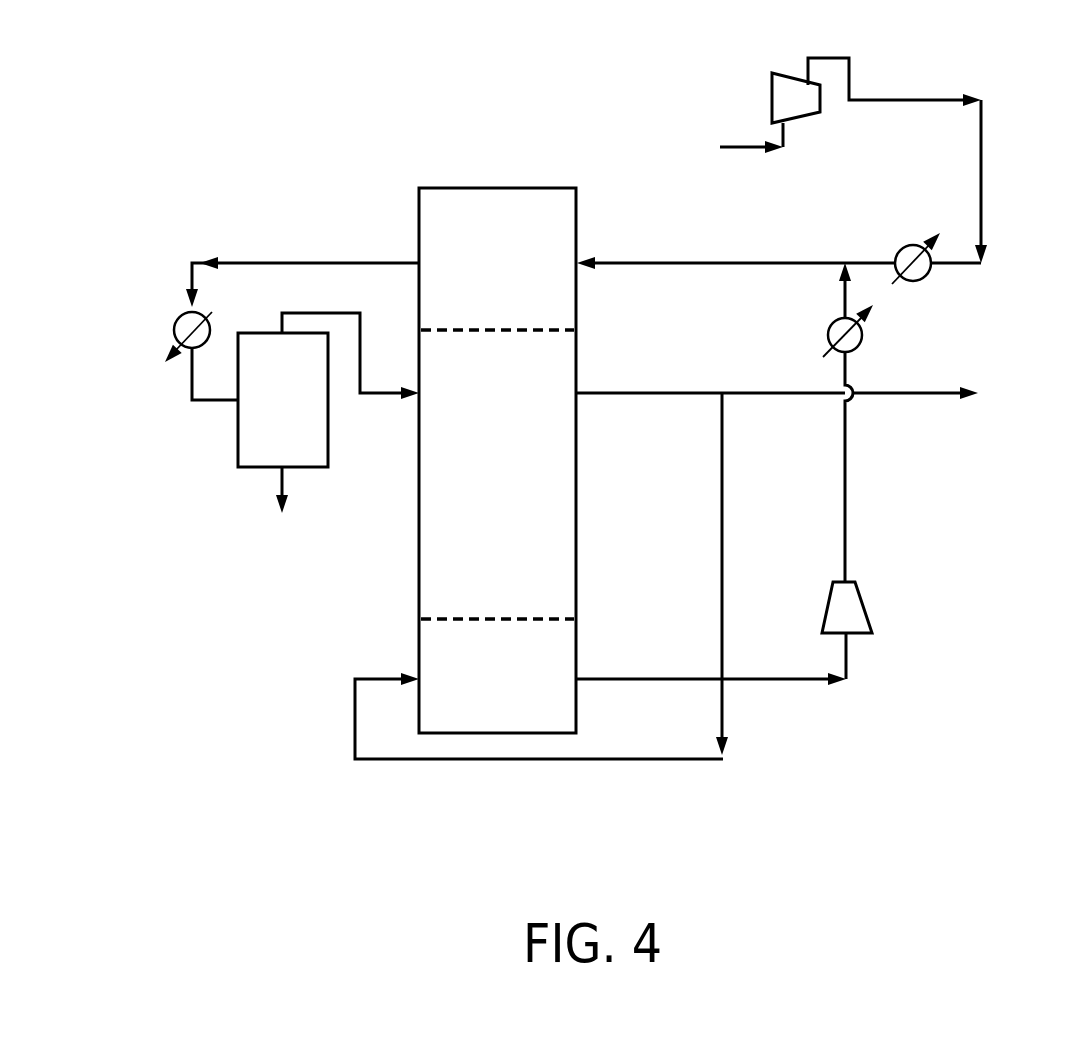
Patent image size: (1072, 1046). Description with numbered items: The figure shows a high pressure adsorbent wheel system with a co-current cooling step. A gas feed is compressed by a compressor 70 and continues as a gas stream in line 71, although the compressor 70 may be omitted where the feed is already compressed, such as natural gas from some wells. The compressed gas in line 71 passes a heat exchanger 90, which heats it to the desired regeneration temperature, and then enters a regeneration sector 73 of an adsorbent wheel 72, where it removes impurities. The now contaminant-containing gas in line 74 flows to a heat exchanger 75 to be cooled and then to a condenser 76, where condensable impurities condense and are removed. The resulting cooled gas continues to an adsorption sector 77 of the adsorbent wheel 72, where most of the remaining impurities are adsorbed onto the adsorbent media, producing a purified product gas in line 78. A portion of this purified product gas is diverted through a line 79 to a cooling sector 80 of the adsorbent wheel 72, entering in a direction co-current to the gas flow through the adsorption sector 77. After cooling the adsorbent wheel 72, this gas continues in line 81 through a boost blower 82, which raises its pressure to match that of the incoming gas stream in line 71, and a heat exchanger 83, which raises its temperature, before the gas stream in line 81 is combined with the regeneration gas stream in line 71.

The compressor 70 is at (795, 107).
The line 71 is at (982, 175).
The adsorbent wheel 72 is at (594, 581).
The regeneration sector 73 is at (511, 277).
The line 74 is at (338, 262).
The heat exchanger 75 is at (178, 330).
The condenser 76 is at (300, 415).
The adsorption sector 77 is at (510, 483).
The line 78 is at (615, 395).
The line 79 is at (722, 515).
The cooling sector 80 is at (510, 688).
The line 81 is at (615, 683).
The boost blower 82 is at (855, 611).
The heat exchanger 83 is at (828, 337).
The heat exchanger 90 is at (915, 272).